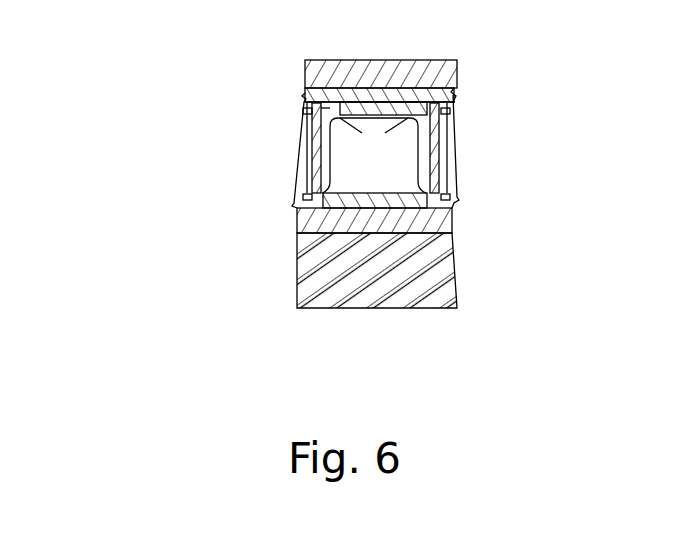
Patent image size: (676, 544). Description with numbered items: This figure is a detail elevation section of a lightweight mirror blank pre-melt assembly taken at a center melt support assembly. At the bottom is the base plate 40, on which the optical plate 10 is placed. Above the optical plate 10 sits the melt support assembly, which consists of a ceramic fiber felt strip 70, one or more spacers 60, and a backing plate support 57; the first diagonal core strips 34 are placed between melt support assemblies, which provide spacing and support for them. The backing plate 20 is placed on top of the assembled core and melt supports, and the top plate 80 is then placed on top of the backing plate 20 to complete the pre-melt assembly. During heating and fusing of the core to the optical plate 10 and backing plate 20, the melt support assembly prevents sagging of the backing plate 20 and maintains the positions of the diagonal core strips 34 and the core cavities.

The top plate 80 is at (307, 72).
The backing plate 20 is at (307, 90).
The first backing plate support 57 is at (328, 108).
The spacer 60 is at (330, 160).
The first diagonal core strip 34 is at (433, 132).
The ceramic fiber felt strip 70 is at (335, 202).
The optical plate 10 is at (337, 228).
The base plate 40 is at (325, 278).